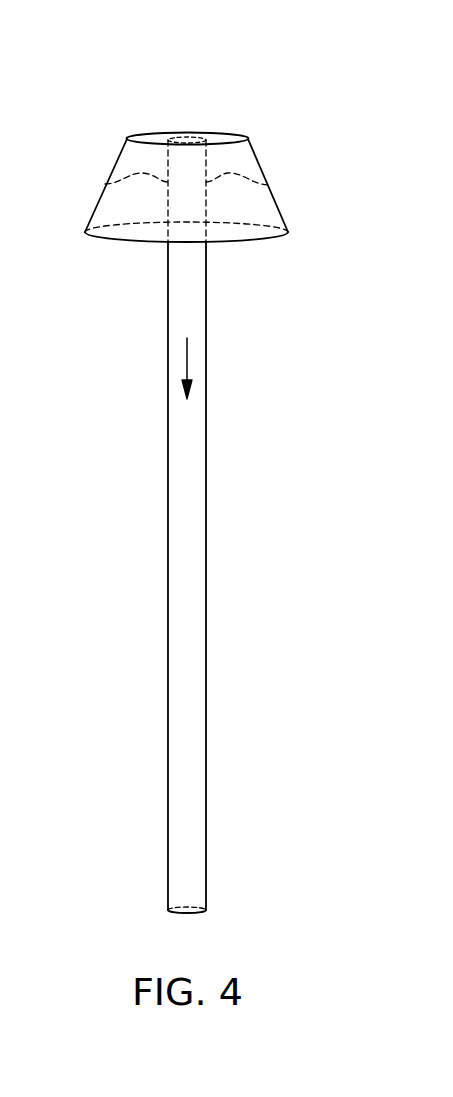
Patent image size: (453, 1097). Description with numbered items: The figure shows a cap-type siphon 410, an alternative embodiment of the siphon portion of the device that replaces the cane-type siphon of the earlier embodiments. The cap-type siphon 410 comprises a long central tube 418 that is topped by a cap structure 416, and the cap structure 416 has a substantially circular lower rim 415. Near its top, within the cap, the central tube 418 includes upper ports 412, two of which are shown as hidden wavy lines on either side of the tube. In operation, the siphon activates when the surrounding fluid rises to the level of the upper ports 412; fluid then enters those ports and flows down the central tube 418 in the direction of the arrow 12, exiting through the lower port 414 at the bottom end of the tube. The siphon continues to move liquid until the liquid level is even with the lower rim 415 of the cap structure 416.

The cap-type siphon 410 is at (97, 101).
The upper ports 412 is at (108, 185).
The lower port 414 is at (188, 912).
The lower rim 415 is at (255, 242).
The cap structure 416 is at (257, 150).
The central tube 418 is at (167, 703).
The arrow 12 is at (185, 358).